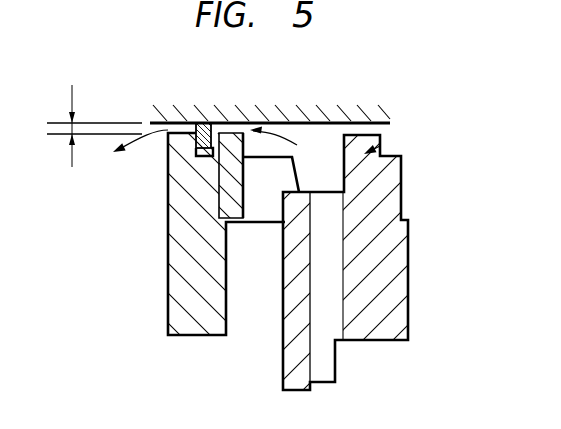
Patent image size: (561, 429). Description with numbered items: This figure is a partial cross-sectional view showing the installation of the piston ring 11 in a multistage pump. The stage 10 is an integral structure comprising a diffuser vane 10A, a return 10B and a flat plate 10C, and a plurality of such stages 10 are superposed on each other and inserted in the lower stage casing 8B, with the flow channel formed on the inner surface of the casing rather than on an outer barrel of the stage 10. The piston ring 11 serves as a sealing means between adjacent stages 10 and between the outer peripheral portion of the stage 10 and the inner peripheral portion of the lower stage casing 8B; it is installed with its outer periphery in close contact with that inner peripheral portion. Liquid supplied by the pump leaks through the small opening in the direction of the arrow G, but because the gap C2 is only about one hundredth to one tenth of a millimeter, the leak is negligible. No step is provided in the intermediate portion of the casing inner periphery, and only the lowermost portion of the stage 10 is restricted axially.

The lower stage casing 8B is at (258, 111).
The piston ring 11 is at (205, 121).
The stage 10 is at (382, 139).
The diffuser vane 10A is at (283, 177).
The return 10B is at (332, 205).
The flat plate 10C is at (190, 237).
The arrow G (leak direction) G is at (130, 140).
The gap C2 is at (60, 124).